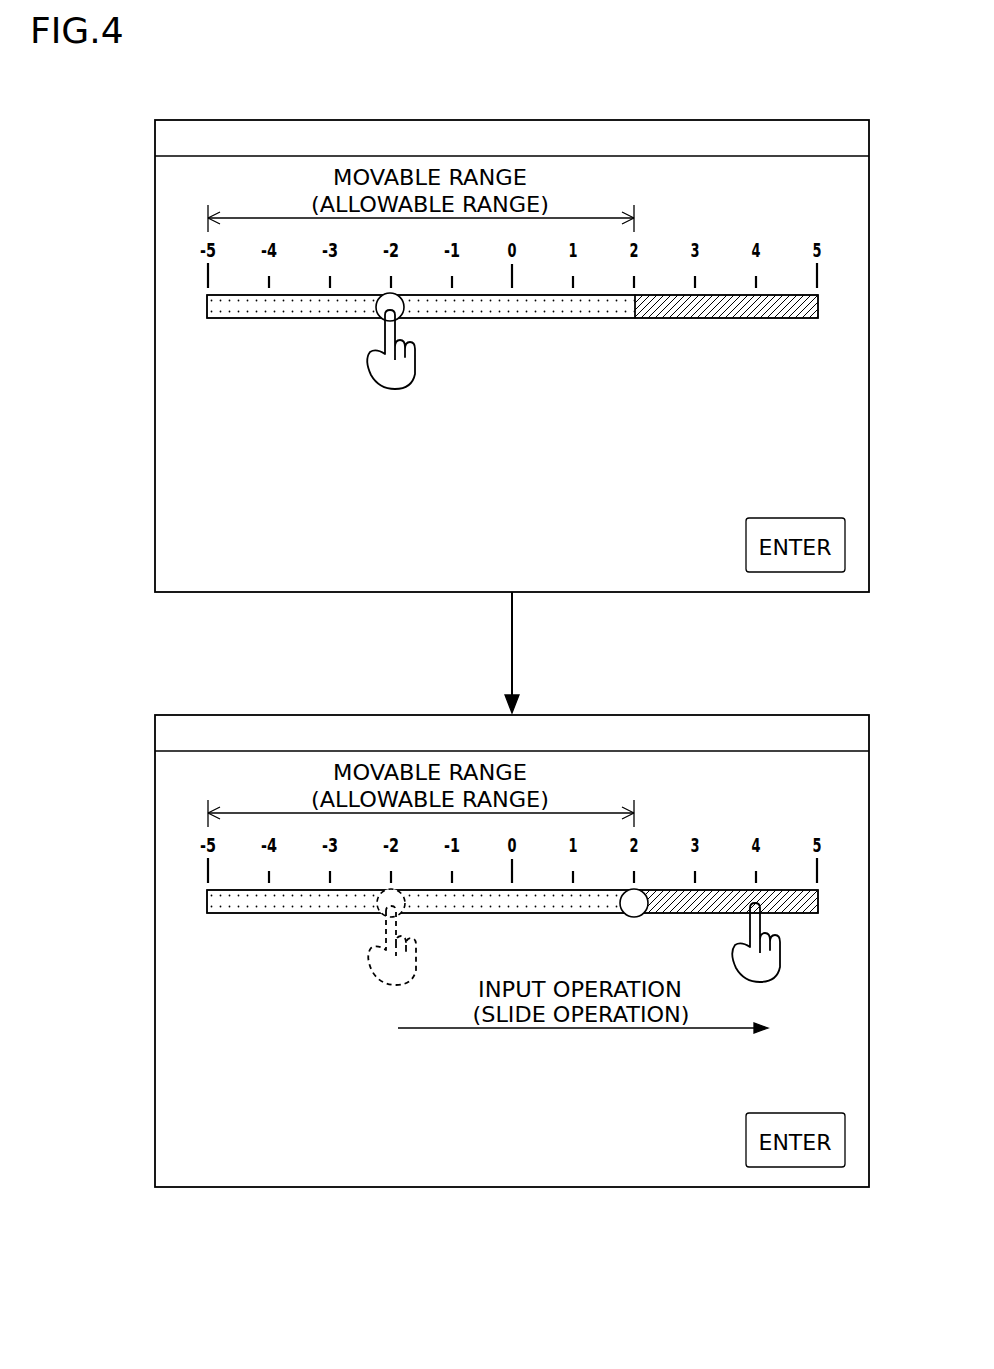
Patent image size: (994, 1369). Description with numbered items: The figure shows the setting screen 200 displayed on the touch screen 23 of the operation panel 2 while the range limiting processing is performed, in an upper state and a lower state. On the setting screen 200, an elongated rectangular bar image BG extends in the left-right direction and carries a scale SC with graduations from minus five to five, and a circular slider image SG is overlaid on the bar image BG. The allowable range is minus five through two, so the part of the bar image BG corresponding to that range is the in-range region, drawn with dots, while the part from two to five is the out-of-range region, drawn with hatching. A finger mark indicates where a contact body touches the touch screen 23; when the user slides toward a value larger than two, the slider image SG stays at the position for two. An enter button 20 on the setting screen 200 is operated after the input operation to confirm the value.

The operation panel 2 is at (499, 635).
The touch screen 23 is at (499, 635).
The setting screen 200 is at (512, 454).
The scale SC is at (557, 530).
The bar image BG is at (808, 320).
The slider image SG is at (375, 306).
The enter button 20 is at (766, 842).